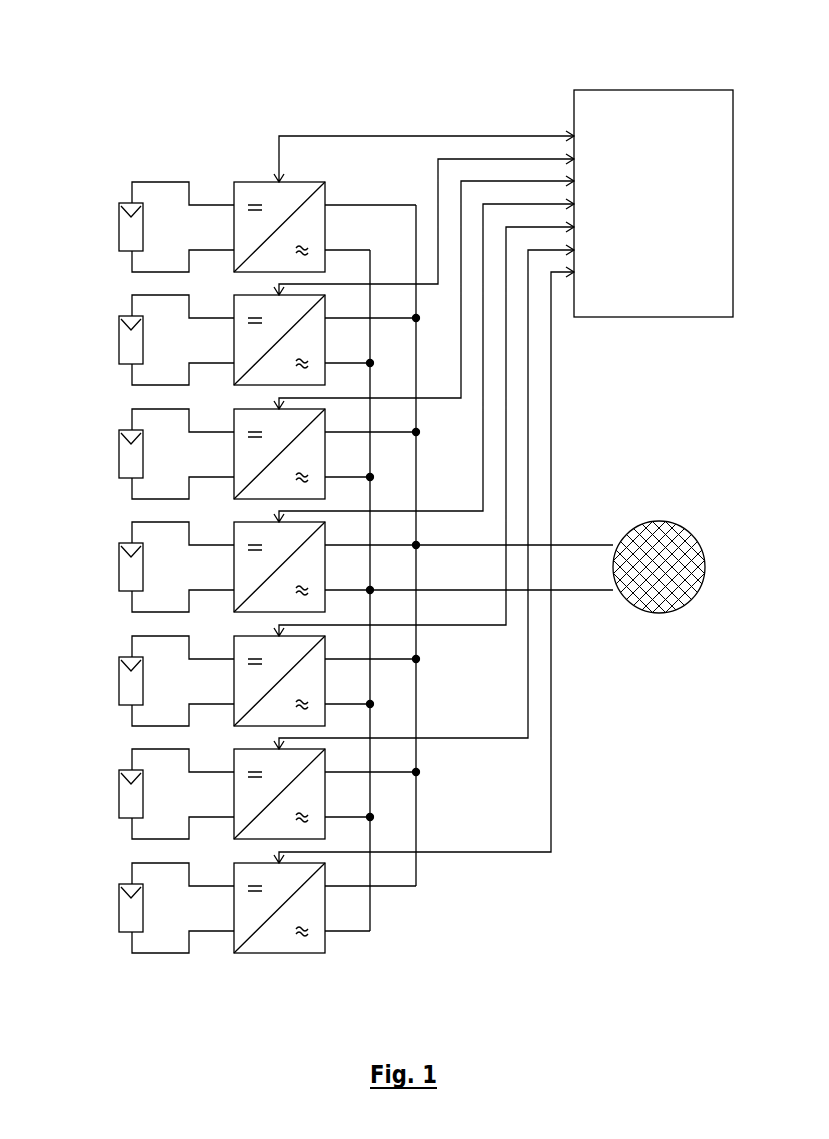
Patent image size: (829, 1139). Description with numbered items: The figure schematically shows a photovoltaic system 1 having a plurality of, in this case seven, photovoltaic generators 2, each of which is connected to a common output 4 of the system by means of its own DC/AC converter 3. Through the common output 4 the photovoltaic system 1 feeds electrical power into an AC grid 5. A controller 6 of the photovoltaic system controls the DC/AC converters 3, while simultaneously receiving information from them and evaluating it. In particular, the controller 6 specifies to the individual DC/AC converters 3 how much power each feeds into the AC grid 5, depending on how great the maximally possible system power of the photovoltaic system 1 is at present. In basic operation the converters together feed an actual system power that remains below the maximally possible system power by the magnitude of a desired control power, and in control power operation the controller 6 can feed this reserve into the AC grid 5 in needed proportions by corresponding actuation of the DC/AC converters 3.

The photovoltaic system 1 is at (208, 103).
The photovoltaic generator 2 is at (109, 218).
The DC/AC converter 3 is at (229, 283).
The common output 4 is at (589, 536).
The AC grid 5 is at (705, 526).
The controller 6 is at (680, 83).